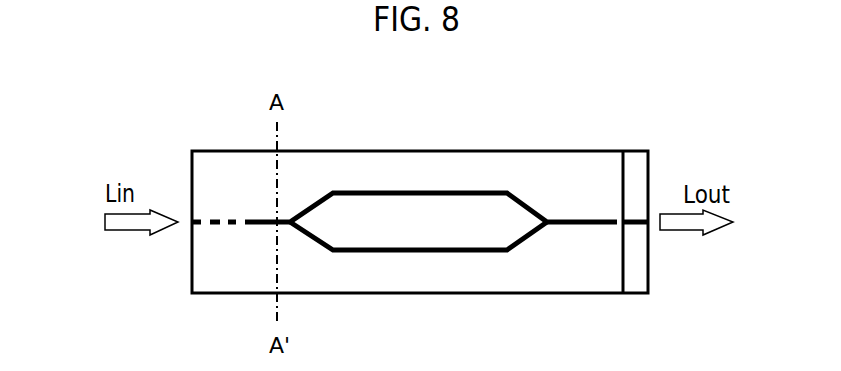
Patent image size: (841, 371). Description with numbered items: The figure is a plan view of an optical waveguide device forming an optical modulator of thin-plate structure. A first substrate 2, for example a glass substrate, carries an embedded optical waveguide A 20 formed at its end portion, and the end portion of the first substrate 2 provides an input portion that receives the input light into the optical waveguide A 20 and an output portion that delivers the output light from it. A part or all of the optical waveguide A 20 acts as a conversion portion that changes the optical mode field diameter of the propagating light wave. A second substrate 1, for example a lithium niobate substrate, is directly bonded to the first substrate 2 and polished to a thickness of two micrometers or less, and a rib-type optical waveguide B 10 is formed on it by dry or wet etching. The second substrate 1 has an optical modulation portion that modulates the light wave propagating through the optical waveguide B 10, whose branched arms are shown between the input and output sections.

The second substrate 1 is at (557, 168).
The first substrate 2 is at (633, 253).
The optical waveguide B 10 is at (522, 237).
The optical waveguide A 20 is at (218, 220).